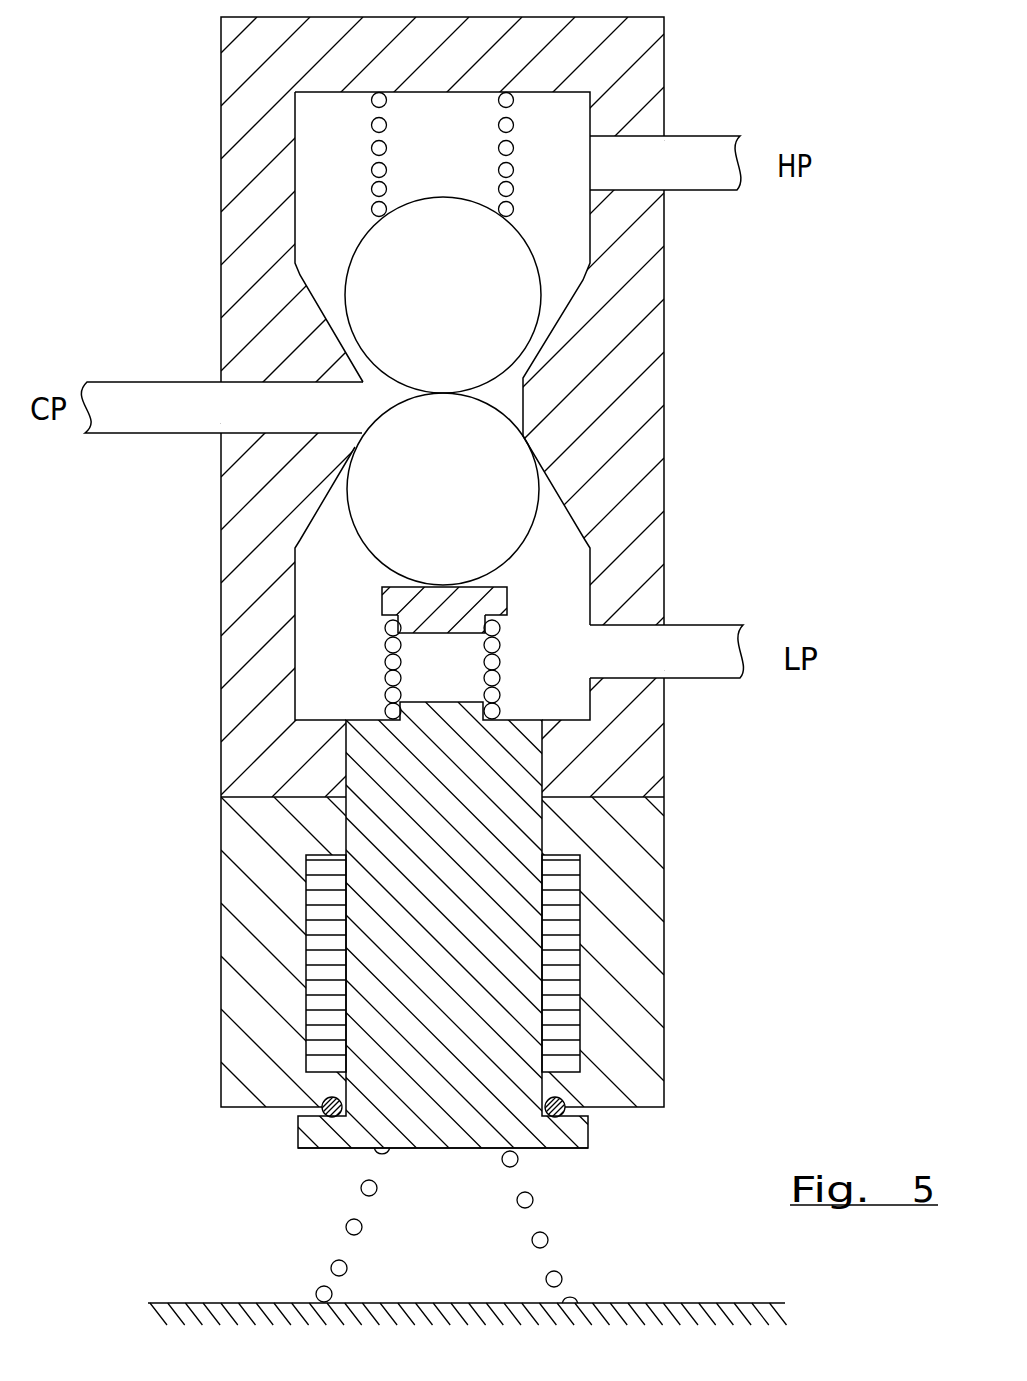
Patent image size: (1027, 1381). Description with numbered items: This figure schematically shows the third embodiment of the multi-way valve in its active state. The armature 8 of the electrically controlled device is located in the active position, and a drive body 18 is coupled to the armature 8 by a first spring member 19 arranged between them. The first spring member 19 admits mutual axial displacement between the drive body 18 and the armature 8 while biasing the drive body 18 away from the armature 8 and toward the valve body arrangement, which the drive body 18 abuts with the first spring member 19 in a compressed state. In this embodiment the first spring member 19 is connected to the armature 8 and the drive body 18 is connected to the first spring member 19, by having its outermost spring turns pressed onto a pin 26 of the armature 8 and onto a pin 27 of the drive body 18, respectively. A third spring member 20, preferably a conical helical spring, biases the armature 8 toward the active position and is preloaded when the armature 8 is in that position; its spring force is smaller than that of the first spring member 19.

The drive body 18 is at (314, 631).
The pin of the drive body 27 is at (410, 628).
The first spring member 19 is at (393, 680).
The pin of the armature 26 is at (418, 712).
The armature 8 is at (362, 1150).
The third spring member 20 is at (334, 1270).